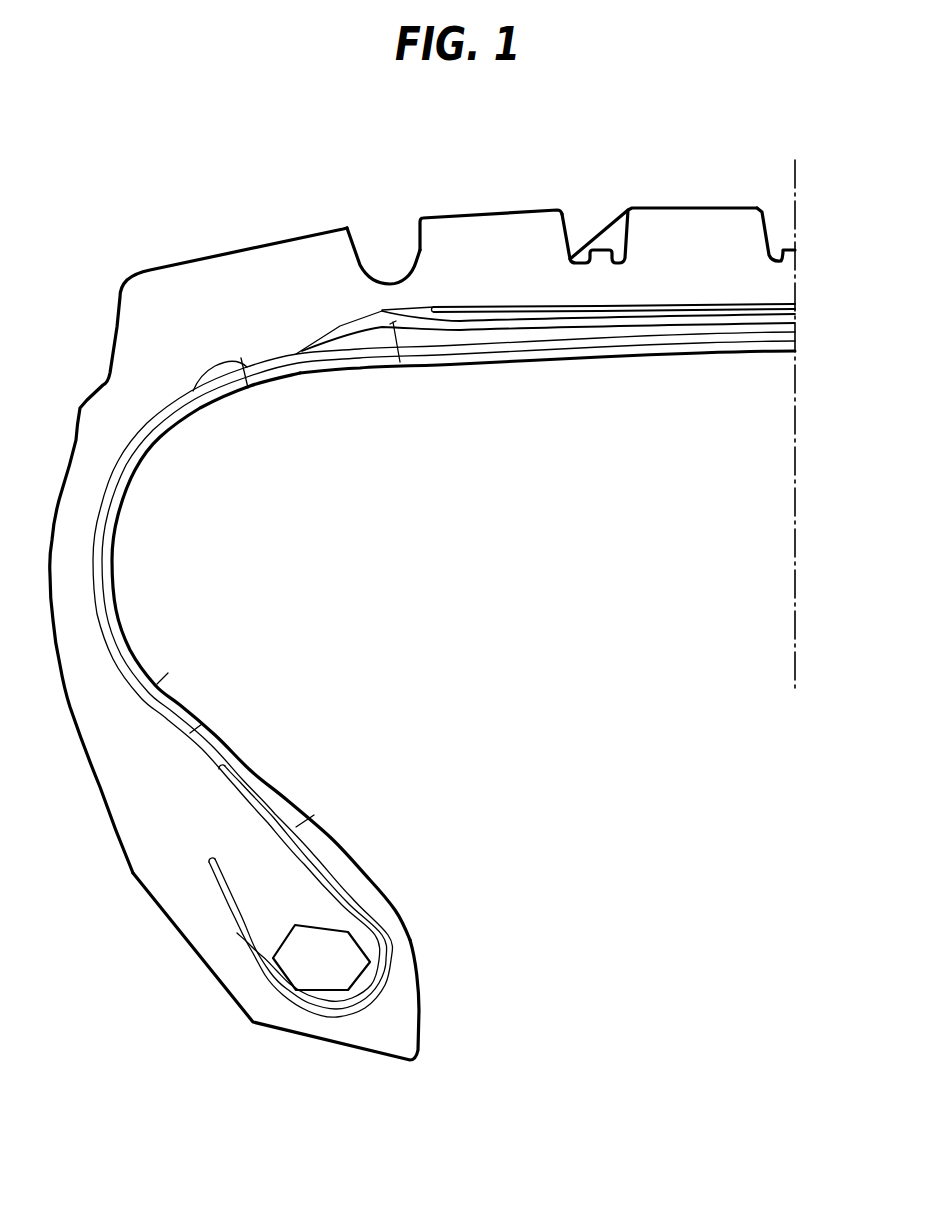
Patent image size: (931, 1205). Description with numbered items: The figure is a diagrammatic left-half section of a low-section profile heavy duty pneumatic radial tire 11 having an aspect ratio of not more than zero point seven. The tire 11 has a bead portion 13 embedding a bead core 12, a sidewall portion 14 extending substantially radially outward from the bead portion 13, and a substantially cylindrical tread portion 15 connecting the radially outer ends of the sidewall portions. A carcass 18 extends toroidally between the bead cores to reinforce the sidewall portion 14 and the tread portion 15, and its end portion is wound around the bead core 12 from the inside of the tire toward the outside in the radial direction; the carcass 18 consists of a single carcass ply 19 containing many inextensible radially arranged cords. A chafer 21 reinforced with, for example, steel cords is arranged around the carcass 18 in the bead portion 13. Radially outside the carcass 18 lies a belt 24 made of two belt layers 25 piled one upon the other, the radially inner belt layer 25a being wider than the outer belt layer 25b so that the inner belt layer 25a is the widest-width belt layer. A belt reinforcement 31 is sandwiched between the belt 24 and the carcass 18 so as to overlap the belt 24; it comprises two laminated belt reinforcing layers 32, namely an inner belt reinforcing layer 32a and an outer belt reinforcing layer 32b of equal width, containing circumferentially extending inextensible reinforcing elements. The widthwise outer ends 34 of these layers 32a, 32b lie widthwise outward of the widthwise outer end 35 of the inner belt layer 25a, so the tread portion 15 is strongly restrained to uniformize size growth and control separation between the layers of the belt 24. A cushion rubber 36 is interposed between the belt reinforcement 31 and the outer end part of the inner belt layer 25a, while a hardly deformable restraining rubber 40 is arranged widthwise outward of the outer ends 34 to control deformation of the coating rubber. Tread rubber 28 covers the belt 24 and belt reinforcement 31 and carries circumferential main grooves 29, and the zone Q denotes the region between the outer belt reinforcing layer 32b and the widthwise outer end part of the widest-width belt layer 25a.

The pneumatic radial tire 11 is at (305, 216).
The bead core 12 is at (348, 946).
The bead portion 13 is at (420, 963).
The sidewall portion 14 is at (128, 624).
The tread portion 15 is at (467, 214).
The carcass 18 is at (157, 685).
The carcass ply 19 is at (192, 732).
The chafer 21 is at (298, 826).
The belt 24 is at (548, 297).
The belt layer 25 is at (538, 318).
The inner belt layer 25a is at (630, 323).
The outer belt layer 25b is at (720, 322).
The tread rubber 28 is at (549, 226).
The main groove 29 is at (413, 250).
The belt reinforcement 31 is at (587, 348).
The belt reinforcing layer 32 is at (633, 330).
The inner belt reinforcing layer 32a is at (699, 330).
The outer belt reinforcing layer 32b is at (754, 330).
The widthwise outer end 34 is at (247, 386).
The widthwise outer end 35 is at (380, 311).
The cushion rubber 36 is at (372, 317).
The restraining rubber 40 is at (213, 374).
The zone Q is at (401, 357).